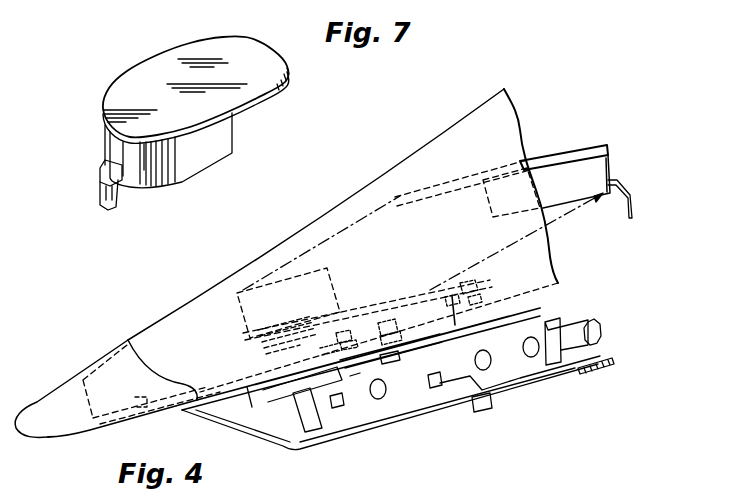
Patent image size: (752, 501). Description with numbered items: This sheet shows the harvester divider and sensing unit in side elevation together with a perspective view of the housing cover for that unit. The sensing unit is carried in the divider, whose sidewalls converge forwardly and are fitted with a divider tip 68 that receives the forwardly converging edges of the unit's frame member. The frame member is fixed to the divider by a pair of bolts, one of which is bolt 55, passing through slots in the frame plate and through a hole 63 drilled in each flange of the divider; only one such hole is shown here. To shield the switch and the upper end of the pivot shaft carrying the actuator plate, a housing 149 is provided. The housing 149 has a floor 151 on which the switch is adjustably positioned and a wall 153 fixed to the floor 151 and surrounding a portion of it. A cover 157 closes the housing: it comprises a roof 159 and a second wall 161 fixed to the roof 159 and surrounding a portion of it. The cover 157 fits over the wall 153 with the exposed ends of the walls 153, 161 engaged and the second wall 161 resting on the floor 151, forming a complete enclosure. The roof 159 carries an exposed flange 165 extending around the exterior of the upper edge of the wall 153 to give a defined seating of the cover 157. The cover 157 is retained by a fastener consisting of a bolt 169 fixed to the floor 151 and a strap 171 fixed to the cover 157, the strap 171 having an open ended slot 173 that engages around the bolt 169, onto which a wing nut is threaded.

In FIG. 4, the bolt 55 is at (387, 327).
In FIG. 4, the hole 63 is at (420, 348).
In FIG. 4, the divider tip 68 is at (53, 425).
In FIG. 4, the housing 149 is at (320, 240).
In FIG. 4, the floor 151 is at (398, 296).
In FIG. 4, the wall 153 is at (250, 318).
In FIG. 7, the cover 157 is at (277, 118).
In FIG. 4, the cover 157 is at (601, 133).
In FIG. 7, the roof 159 is at (158, 94).
In FIG. 4, the roof 159 is at (574, 148).
In FIG. 7, the second wall 161 is at (222, 130).
In FIG. 7, the exposed flange 165 is at (270, 82).
In FIG. 4, the bolt 169 is at (478, 284).
In FIG. 7, the strap 171 is at (105, 168).
In FIG. 7, the open ended slot 173 is at (112, 208).